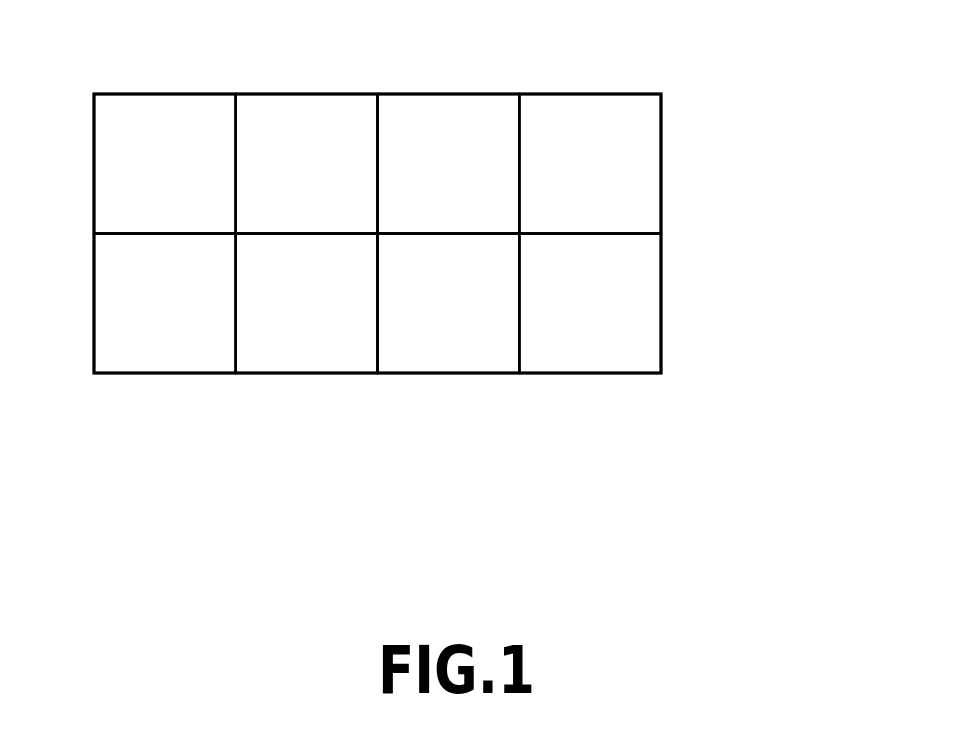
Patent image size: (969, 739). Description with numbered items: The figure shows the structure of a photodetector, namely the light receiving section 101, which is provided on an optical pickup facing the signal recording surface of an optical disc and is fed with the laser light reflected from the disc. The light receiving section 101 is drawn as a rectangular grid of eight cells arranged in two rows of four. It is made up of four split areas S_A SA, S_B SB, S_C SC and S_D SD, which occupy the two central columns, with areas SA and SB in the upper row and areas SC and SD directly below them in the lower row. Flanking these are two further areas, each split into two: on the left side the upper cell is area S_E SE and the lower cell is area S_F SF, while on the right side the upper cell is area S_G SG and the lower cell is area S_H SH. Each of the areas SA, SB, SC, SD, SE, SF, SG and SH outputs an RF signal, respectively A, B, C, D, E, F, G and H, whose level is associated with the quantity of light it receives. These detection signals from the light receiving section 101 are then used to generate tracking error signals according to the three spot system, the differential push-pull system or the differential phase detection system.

The light receiving section 101 is at (739, 113).
The area S_E SE is at (167, 94).
The split area S_A SA is at (303, 94).
The split area S_B SB is at (450, 94).
The area S_G SG is at (590, 94).
The area S_F SF is at (172, 373).
The split area S_C SC is at (309, 373).
The split area S_D SD is at (457, 373).
The area S_H SH is at (597, 373).